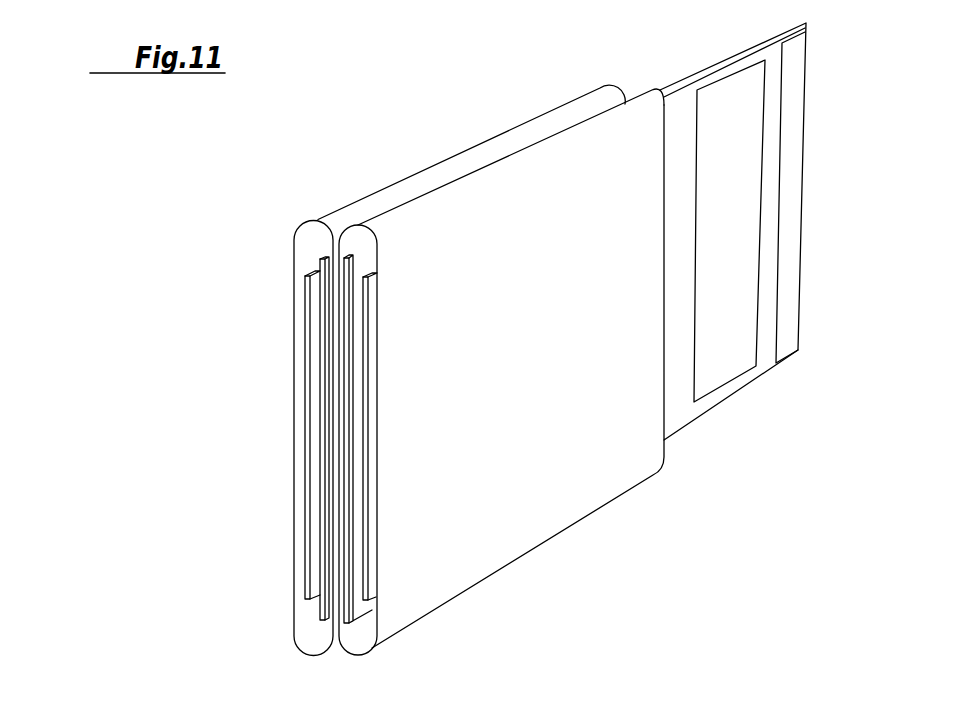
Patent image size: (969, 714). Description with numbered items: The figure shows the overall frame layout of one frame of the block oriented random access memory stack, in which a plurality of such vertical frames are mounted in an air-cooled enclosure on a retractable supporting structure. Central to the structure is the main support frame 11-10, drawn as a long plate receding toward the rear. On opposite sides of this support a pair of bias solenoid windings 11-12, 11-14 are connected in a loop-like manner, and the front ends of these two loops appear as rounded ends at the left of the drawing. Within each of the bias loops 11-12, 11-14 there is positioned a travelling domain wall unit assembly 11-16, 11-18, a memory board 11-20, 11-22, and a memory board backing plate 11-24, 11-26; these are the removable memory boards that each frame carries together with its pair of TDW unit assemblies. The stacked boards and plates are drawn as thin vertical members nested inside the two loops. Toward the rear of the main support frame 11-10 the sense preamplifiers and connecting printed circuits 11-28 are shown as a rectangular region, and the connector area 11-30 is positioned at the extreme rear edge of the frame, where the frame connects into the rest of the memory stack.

The main support frame 11-10 is at (688, 262).
The bias solenoid winding 11-12 is at (402, 182).
The bias solenoid winding 11-14 is at (557, 523).
The travelling domain wall (TDW) unit assembly 11-16 is at (188, 438).
The travelling domain wall (TDW) unit assembly 11-18 is at (212, 439).
The memory board 11-20 is at (323, 392).
The memory board 11-22 is at (350, 505).
The memory board backing plate 11-24 is at (322, 290).
The memory board backing plate 11-26 is at (365, 447).
The connecting printed circuits 11-28 is at (713, 377).
The connector area 11-30 is at (787, 343).